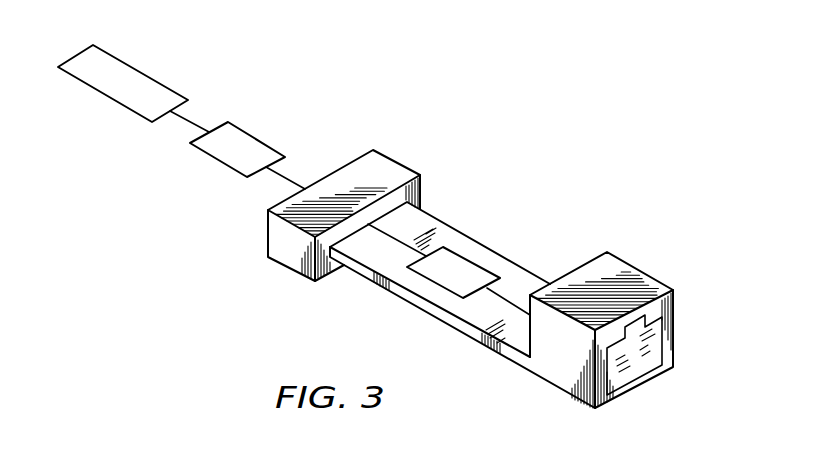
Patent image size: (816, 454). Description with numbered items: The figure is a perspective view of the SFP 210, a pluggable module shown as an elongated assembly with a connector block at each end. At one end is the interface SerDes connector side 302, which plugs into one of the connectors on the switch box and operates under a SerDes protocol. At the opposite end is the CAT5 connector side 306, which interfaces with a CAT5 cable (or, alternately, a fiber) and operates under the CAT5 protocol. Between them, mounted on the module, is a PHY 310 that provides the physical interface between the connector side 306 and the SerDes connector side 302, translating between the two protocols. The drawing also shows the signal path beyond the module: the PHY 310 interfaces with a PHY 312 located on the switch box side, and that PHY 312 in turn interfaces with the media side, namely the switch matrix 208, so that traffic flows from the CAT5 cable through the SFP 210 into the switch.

The switch matrix 208 is at (137, 72).
The PHY 312 is at (253, 138).
The SFP 210 is at (533, 236).
The CAT5 connector side 306 is at (297, 265).
The interface SerDes connector side 302 is at (418, 303).
The PHY 310 is at (467, 262).